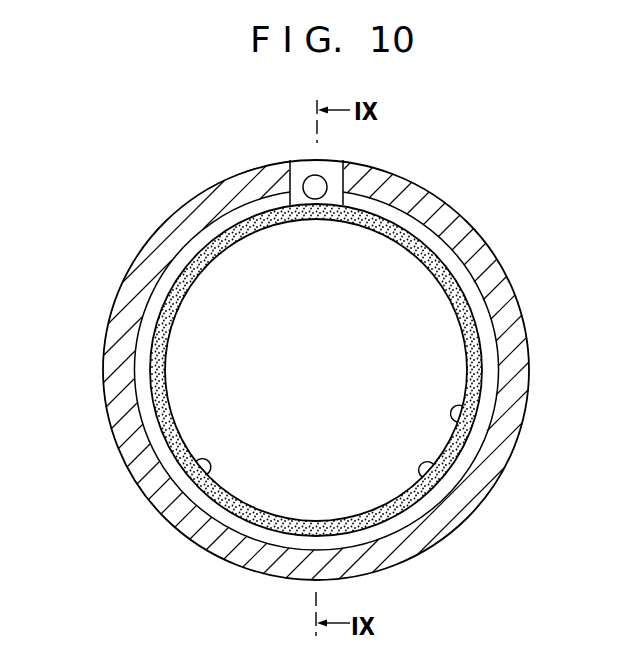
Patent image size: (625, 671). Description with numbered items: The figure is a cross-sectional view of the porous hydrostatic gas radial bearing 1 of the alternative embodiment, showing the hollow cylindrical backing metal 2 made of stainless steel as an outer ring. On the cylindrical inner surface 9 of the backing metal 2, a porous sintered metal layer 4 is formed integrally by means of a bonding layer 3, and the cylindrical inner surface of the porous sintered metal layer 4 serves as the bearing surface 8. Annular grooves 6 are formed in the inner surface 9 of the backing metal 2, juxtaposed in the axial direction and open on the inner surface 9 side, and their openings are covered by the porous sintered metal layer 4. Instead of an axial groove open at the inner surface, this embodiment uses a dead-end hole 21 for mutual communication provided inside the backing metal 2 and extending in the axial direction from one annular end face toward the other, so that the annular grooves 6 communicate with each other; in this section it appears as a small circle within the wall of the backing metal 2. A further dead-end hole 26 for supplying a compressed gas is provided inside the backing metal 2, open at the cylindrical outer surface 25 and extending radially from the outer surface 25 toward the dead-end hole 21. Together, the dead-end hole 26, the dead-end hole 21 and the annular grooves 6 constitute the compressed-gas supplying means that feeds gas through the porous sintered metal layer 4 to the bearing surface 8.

The porous hydrostatic gas radial bearing 1 is at (149, 195).
The backing metal 2 is at (513, 325).
The bonding layer 3 is at (436, 488).
The porous sintered metal layer 4 is at (160, 424).
The annular grooves 6 is at (465, 275).
The bearing surface 8 is at (462, 418).
The inner surface 9 is at (197, 480).
The dead-end hole for mutual communication 21 is at (312, 178).
The outer surface 25 is at (105, 321).
The dead-end hole for supplying a compressed gas 26 is at (337, 177).